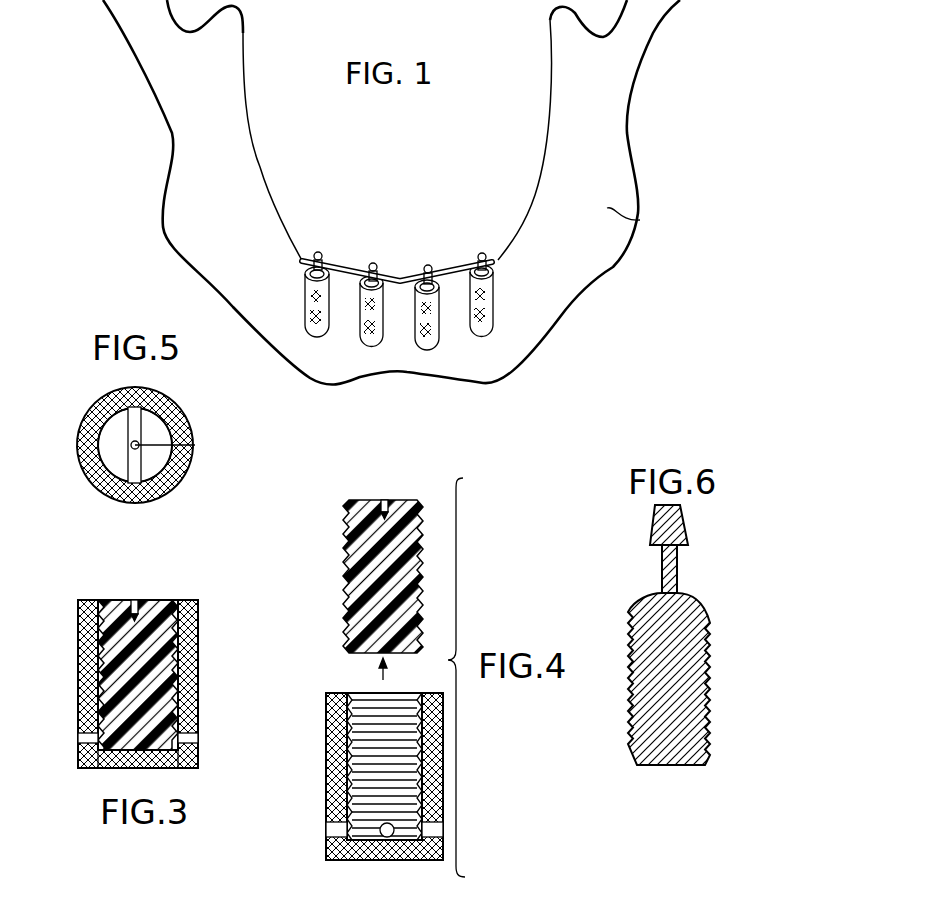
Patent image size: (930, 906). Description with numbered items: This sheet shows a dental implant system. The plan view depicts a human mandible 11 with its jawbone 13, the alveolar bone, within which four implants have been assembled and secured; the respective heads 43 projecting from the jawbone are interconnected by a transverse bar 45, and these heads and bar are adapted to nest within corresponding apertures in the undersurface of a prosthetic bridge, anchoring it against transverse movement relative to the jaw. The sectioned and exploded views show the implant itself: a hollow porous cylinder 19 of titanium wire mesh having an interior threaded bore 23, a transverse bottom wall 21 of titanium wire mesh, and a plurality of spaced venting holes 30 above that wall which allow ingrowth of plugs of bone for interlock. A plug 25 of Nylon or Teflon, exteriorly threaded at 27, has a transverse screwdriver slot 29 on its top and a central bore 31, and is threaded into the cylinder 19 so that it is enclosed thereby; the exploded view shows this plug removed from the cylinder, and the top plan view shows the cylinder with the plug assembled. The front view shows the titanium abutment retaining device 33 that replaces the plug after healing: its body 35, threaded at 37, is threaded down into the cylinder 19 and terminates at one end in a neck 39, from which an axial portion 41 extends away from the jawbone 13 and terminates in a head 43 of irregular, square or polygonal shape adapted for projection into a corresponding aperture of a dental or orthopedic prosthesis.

In FIG. 1, the mandible 11 is at (639, 125).
In FIG. 1, the jawbone 13 is at (638, 222).
In FIG. 1, the hollow porous cylinder 19 is at (305, 303).
In FIG. 5, the hollow porous cylinder 19 is at (80, 458).
In FIG. 3, the hollow porous cylinder 19 is at (79, 679).
In FIG. 4, the hollow porous cylinder 19 is at (326, 786).
In FIG. 3, the transverse bottom wall 21 is at (118, 762).
In FIG. 4, the interior threaded bore 23 is at (352, 693).
In FIG. 5, the plug 25 is at (153, 421).
In FIG. 3, the plug 25 is at (160, 601).
In FIG. 4, the plug 25 is at (343, 545).
In FIG. 3, the exterior threads 27 is at (180, 704).
In FIG. 4, the exterior threads 27 is at (346, 590).
In FIG. 5, the screwdriver slot 29 is at (138, 468).
In FIG. 3, the screwdriver slot 29 is at (134, 601).
In FIG. 4, the screwdriver slot 29 is at (386, 500).
In FIG. 5, the central bore 31 is at (195, 445).
In FIG. 3, the central bore 31 is at (136, 618).
In FIG. 4, the central bore 31 is at (390, 518).
In FIG. 3, the venting holes 30 is at (79, 740).
In FIG. 4, the venting holes 30 is at (330, 836).
In FIG. 1, the abutment retaining device 33 is at (488, 267).
In FIG. 6, the abutment retaining device 33 is at (683, 635).
In FIG. 6, the body 35 is at (692, 733).
In FIG. 6, the threads 37 is at (710, 639).
In FIG. 6, the neck 39 is at (688, 576).
In FIG. 6, the axial portion 41 is at (662, 568).
In FIG. 1, the head 43 is at (318, 252).
In FIG. 6, the head 43 is at (651, 525).
In FIG. 1, the transverse bar 45 is at (358, 272).